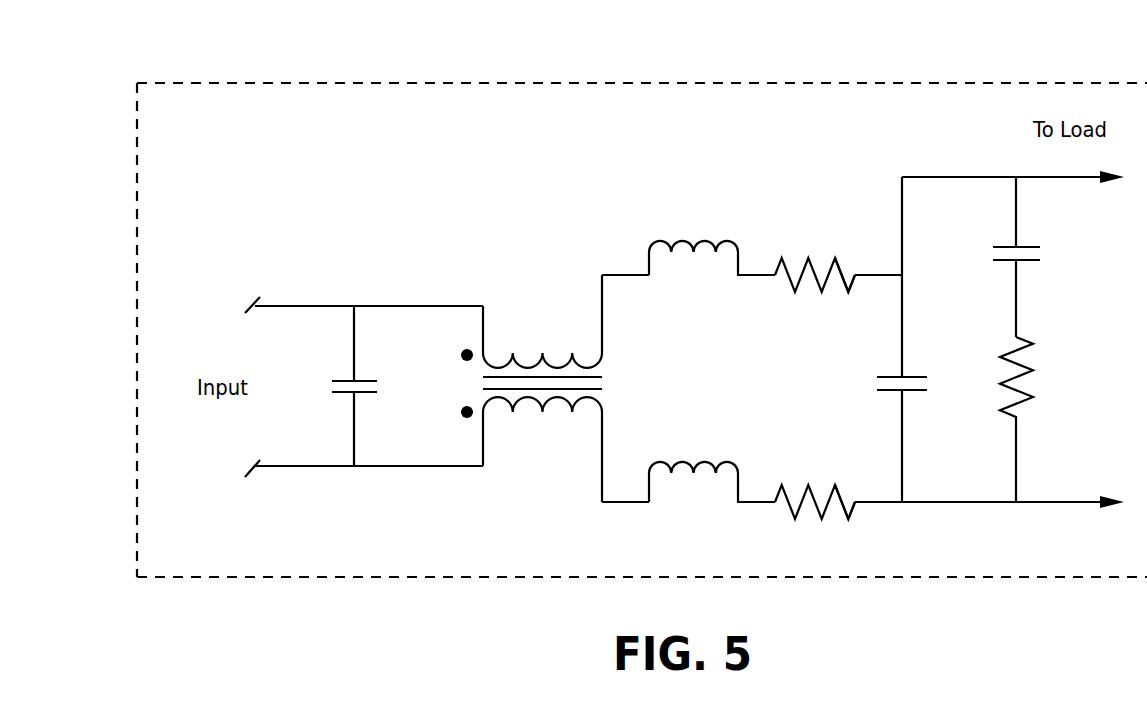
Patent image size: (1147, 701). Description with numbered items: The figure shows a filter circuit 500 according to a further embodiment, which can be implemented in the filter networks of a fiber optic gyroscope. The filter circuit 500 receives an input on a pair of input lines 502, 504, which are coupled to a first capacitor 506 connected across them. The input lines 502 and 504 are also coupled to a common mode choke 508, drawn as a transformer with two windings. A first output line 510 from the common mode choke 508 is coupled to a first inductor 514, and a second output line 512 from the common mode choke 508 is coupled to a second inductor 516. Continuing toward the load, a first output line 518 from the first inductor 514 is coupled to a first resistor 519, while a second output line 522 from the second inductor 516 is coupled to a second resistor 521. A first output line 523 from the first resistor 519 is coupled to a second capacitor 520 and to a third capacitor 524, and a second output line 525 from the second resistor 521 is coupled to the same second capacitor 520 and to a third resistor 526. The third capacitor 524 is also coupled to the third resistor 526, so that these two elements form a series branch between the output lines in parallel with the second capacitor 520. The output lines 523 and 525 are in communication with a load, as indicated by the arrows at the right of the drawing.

The filter circuit 500 is at (705, 80).
The input line 502 is at (268, 304).
The input line 504 is at (282, 467).
The first capacitor 506 is at (363, 382).
The common mode choke 508 is at (483, 323).
The first output line 510 is at (622, 273).
The second output line 512 is at (630, 503).
The first inductor 514 is at (735, 258).
The second inductor 516 is at (677, 462).
The first output line 518 is at (753, 272).
The first resistor 519 is at (842, 283).
The second capacitor 520 is at (912, 375).
The second resistor 521 is at (827, 505).
The second output line 522 is at (753, 502).
The first output line 523 is at (880, 270).
The third capacitor 524 is at (1025, 243).
The second output line 525 is at (888, 503).
The third resistor 526 is at (1022, 400).